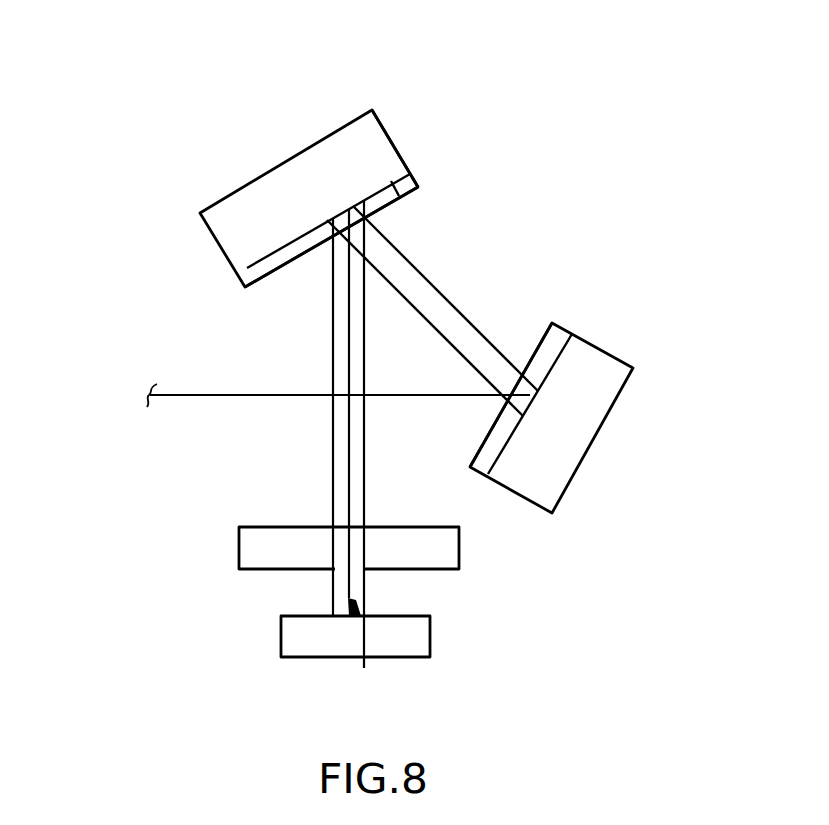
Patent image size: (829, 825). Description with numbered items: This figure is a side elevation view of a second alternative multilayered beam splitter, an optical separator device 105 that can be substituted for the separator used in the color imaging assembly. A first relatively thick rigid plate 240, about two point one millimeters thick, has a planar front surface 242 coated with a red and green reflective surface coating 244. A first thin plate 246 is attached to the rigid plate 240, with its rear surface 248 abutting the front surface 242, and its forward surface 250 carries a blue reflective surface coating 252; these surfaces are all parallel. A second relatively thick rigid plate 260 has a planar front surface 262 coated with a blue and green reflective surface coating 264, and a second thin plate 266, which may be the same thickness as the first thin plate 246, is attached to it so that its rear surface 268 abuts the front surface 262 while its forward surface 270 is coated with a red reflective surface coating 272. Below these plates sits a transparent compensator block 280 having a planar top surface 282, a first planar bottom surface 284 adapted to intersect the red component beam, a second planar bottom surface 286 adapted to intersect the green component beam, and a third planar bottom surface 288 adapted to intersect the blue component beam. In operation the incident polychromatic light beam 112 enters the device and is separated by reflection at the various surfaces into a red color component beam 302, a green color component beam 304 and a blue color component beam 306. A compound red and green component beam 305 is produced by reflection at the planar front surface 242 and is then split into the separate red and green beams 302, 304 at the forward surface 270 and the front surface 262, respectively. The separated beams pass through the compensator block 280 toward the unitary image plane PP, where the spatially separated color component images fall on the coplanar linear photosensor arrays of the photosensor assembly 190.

The optical separator device 105 is at (214, 180).
The incident polychromatic light beam 112 is at (201, 396).
The photosensor assembly 190 is at (293, 658).
The first rigid plate 240 is at (588, 464).
The planar front surface 242 is at (492, 462).
The red and green reflective surface coating 244 is at (503, 441).
The first thin plate 246 is at (542, 320).
The rear surface 248 is at (548, 373).
The forward surface 250 is at (526, 342).
The blue reflective surface coating 252 is at (516, 347).
The second rigid plate 260 is at (314, 136).
The planar front surface 262 is at (247, 270).
The blue and green reflective surface coating 264 is at (270, 278).
The second thin plate 266 is at (422, 176).
The rear surface 268 is at (407, 200).
The forward surface 270 is at (383, 208).
The red reflective surface coating 272 is at (370, 221).
The transparent compensator block 280 is at (230, 550).
The planar top surface 282 is at (275, 527).
The first planar bottom surface 284 is at (425, 571).
The second planar bottom surface 286 is at (342, 616).
The third planar bottom surface 288 is at (257, 572).
The red color component beam 302 is at (460, 350).
The green color component beam 304 is at (367, 456).
The compound red and green component beam 305 is at (445, 298).
The blue color component beam 306 is at (315, 590).
The unitary image plane PP is at (428, 612).